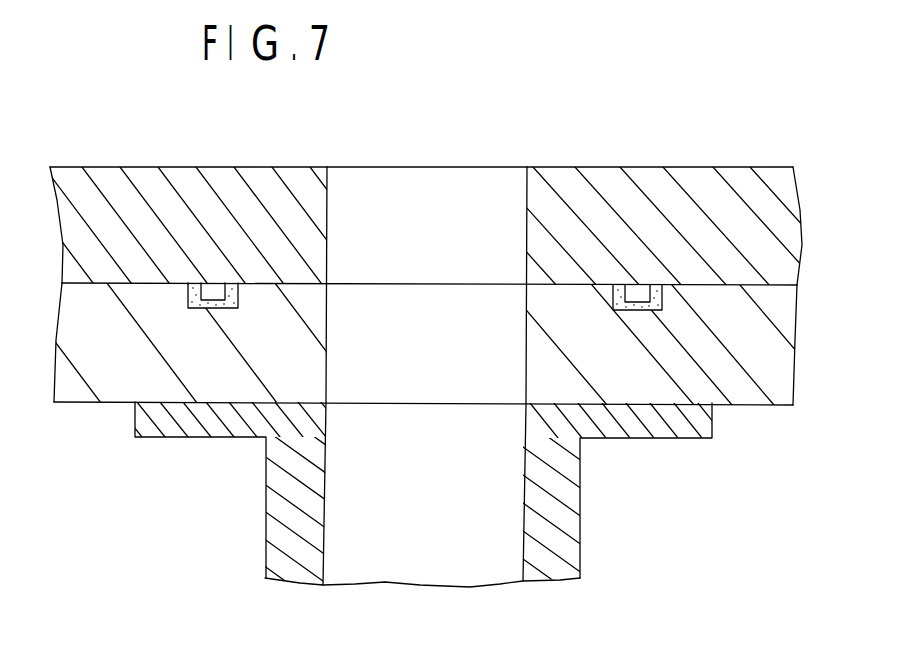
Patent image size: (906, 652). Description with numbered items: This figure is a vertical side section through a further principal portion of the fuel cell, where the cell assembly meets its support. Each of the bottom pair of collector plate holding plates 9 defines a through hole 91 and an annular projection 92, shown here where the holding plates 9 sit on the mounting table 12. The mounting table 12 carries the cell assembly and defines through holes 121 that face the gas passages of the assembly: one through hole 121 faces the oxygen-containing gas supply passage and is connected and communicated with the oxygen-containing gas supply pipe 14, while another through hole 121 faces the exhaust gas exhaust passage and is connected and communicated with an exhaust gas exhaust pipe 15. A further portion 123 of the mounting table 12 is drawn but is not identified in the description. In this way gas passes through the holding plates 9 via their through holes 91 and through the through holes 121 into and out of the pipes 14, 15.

The collector plate holding plate 9 is at (563, 185).
The through hole 91 is at (328, 223).
The annular projection 92 is at (213, 298).
The through hole 121 is at (327, 357).
The mounting table 12 is at (436, 448).
The flange of bearing bush 123 is at (207, 310).
The oxygen-containing gas supply pipe 14 is at (476, 565).
The bearing sleeve end 15 is at (580, 557).